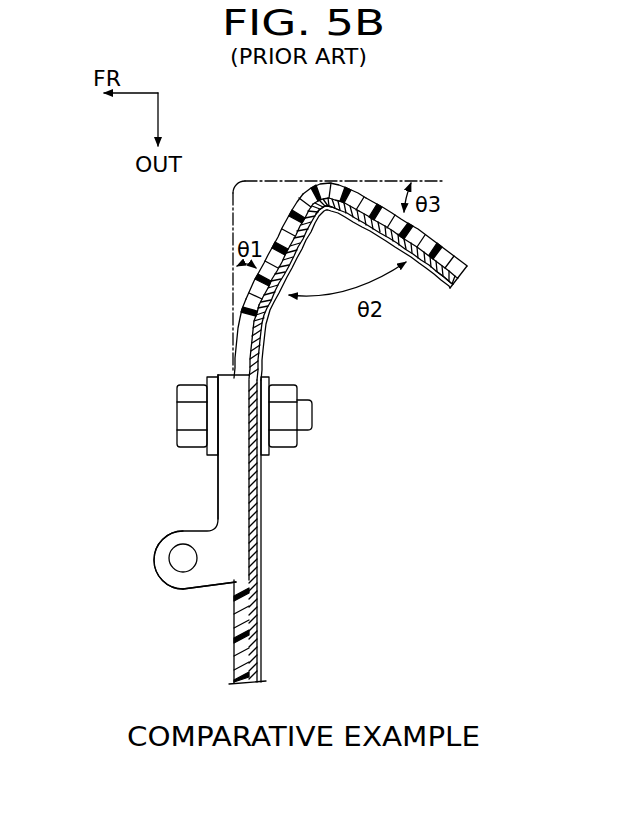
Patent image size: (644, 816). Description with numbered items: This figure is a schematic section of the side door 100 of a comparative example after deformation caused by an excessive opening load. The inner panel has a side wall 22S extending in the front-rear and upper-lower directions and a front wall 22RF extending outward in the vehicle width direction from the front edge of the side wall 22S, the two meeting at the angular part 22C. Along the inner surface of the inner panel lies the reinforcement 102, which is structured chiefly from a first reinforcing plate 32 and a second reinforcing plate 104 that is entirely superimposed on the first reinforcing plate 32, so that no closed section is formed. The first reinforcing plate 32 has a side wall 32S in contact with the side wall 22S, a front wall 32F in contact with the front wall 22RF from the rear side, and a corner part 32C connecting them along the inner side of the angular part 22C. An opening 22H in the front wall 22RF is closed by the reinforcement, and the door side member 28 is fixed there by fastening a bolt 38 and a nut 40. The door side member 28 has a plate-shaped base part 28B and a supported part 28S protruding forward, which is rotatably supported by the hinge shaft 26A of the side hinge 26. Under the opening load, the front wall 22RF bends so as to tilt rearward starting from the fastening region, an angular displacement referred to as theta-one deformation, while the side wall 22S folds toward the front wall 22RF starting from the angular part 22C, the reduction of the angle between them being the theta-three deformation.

The angular part 22C is at (310, 187).
The side wall 22S is at (439, 245).
The front wall 22RF is at (233, 313).
The opening 22H is at (232, 362).
The side door 100 is at (473, 241).
The first reinforcing plate 32 is at (407, 262).
The corner part 32C is at (326, 209).
The side wall 32S is at (457, 285).
The front wall 32F is at (254, 643).
The second reinforcing plate 104 is at (432, 275).
The reinforcement 102 is at (480, 383).
The bolt 38 is at (313, 415).
The nut 40 is at (293, 446).
The door side member 28 is at (70, 507).
The base part 28B is at (218, 478).
The supported part 28S is at (153, 551).
The hinge shaft 26A is at (181, 566).
The side hinge 26 is at (152, 615).